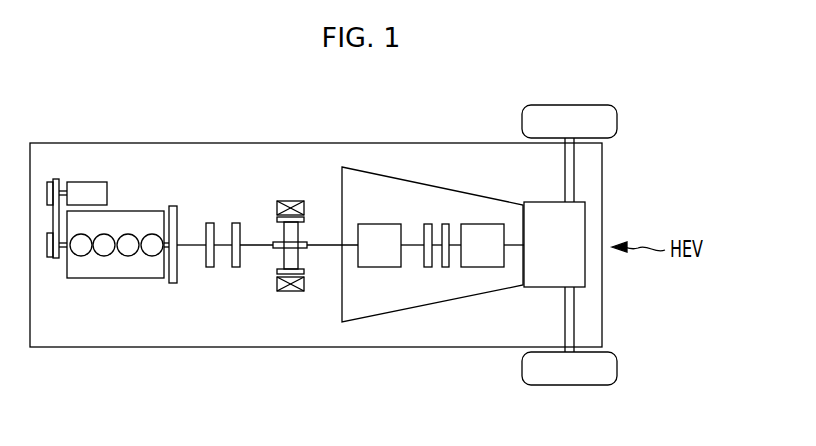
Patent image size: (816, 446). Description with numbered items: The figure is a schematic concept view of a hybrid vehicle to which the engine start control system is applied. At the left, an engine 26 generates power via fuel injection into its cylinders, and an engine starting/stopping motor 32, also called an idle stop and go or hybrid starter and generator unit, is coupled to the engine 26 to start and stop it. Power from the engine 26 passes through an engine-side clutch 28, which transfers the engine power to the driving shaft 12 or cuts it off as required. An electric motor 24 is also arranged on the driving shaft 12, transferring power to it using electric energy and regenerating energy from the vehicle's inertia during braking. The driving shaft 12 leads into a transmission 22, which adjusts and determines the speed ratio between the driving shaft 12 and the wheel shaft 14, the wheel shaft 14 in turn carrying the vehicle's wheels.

The driving shaft 12 is at (253, 242).
The wheel shaft 14 is at (568, 172).
The transmission 22 is at (418, 183).
The electric motor 24 is at (290, 201).
The engine 26 is at (135, 217).
The engine-side clutch 28 is at (220, 229).
The engine starting/stopping motor 32 is at (88, 188).